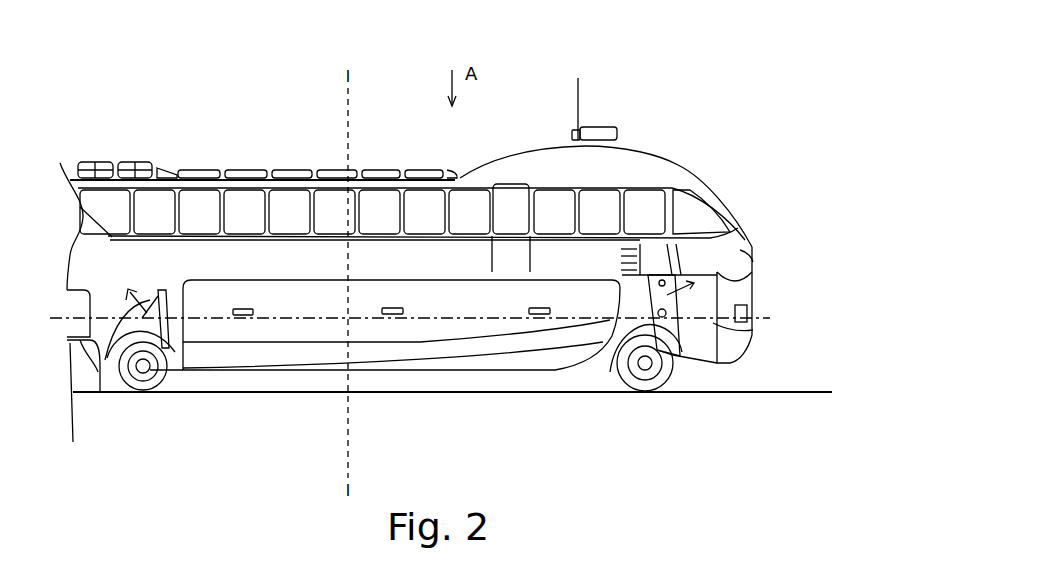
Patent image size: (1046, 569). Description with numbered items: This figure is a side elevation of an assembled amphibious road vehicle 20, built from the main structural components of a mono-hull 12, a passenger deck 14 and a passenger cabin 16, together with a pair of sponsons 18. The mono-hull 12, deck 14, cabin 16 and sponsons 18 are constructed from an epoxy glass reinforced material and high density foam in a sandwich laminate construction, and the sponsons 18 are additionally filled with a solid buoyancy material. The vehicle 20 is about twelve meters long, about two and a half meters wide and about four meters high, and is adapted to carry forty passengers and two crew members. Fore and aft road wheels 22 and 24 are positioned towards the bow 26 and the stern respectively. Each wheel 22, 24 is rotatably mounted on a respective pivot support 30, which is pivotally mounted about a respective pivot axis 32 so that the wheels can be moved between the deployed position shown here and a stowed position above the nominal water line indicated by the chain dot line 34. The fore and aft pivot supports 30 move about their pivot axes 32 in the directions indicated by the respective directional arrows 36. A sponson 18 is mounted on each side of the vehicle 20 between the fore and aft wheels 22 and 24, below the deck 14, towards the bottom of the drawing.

The mono-hull 12 is at (698, 355).
The passenger deck 14 is at (755, 276).
The passenger cabin 16 is at (222, 257).
The sponson 18 is at (285, 356).
The amphibious road vehicle 20 is at (690, 122).
The fore road wheel 22 is at (637, 392).
The aft road wheel 24 is at (140, 390).
The bow 26 is at (757, 253).
The pivot support 30 is at (183, 372).
The pivot axis 32 is at (158, 288).
The nominal water line 34 is at (760, 318).
The directional arrow 36 is at (92, 340).